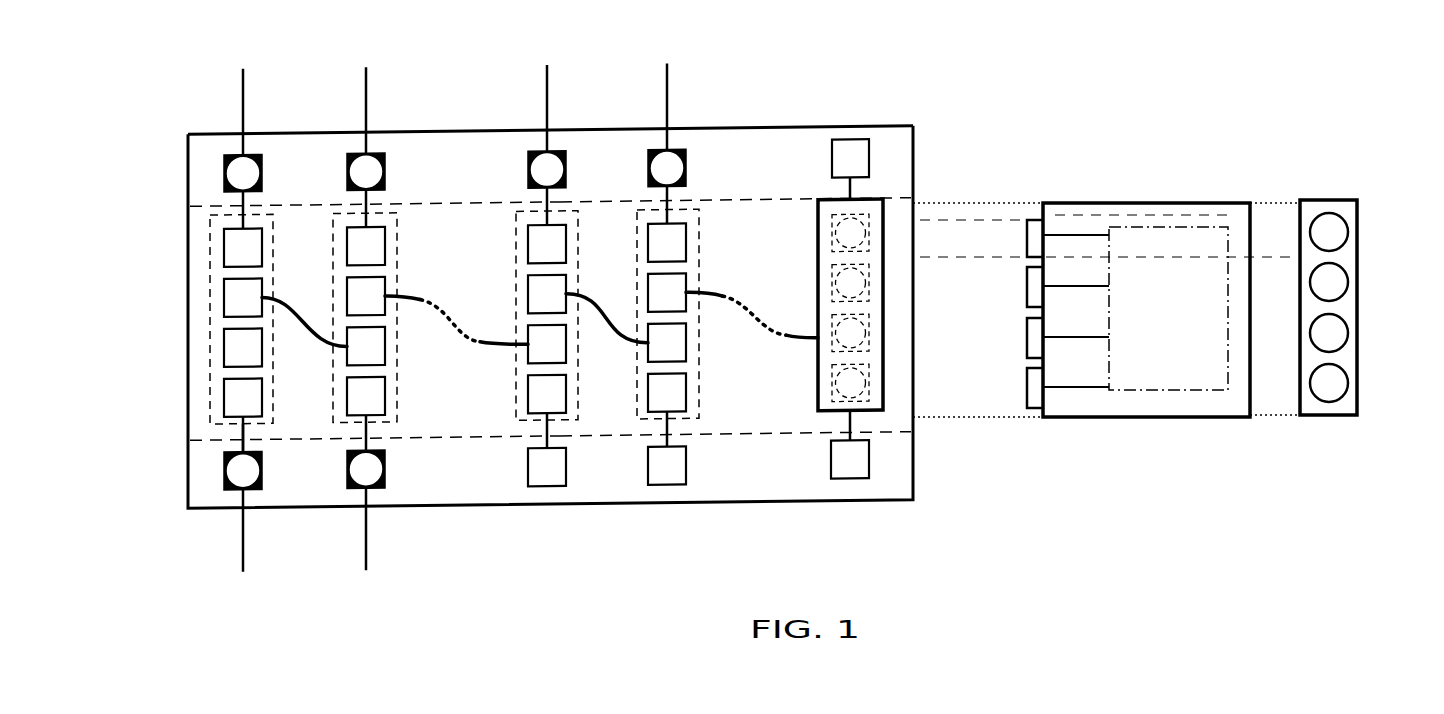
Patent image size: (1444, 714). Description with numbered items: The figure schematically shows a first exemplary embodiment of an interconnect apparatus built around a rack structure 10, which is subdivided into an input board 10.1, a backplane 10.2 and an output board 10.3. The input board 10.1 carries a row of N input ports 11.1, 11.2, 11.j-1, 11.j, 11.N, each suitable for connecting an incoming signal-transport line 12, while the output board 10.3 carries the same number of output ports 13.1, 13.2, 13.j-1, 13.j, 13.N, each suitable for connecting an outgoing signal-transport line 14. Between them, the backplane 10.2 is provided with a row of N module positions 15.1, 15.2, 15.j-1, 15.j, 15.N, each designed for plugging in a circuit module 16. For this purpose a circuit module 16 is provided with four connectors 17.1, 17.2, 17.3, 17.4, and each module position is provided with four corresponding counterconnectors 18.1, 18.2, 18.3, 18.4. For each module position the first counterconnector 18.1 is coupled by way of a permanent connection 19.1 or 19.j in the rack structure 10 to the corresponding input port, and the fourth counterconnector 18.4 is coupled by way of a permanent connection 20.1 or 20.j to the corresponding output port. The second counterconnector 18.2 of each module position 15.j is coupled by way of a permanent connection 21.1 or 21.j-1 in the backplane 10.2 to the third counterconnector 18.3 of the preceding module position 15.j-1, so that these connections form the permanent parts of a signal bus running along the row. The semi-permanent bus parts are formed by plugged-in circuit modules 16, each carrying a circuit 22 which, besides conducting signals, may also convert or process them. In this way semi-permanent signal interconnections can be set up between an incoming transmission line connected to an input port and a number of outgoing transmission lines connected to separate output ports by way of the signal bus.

The rack structure 10 is at (196, 124).
The input board 10.1 is at (203, 466).
The backplane 10.2 is at (200, 338).
The output board 10.3 is at (508, 153).
The input port 11.1 is at (263, 492).
The input port 11.2 is at (385, 493).
The input port 11.j-1 is at (565, 487).
The input port 11.j is at (688, 489).
The input port 11.N is at (872, 491).
The incoming signal-transport line 12 is at (235, 543).
The output port 13.1 is at (253, 146).
The output port 13.2 is at (384, 141).
The output port 13.j-1 is at (563, 148).
The output port 13.j is at (686, 147).
The output port 13.N is at (875, 142).
The outgoing signal-transport line 14 is at (233, 89).
The module position 15.1 is at (276, 221).
The module position 15.2 is at (400, 220).
The module position 15.j-1 is at (583, 223).
The module position 15.j is at (700, 224).
The module position 15.N is at (817, 211).
The circuit module 16 is at (886, 398).
The first connector 17.1 is at (1023, 383).
The second connector 17.2 is at (1023, 337).
The third connector 17.3 is at (1022, 290).
The fourth connector 17.4 is at (1022, 248).
The first counterconnector 18.1 is at (692, 394).
The second counterconnector 18.2 is at (692, 345).
The third counterconnector 18.3 is at (690, 284).
The fourth counterconnector 18.4 is at (697, 242).
The permanent connection 19.1 is at (243, 436).
The permanent connection 19.j is at (670, 431).
The permanent connection 20.1 is at (186, 202).
The permanent connection 20.j is at (685, 198).
The permanent connection 21.1 is at (302, 314).
The permanent connection 21.j-1 is at (607, 323).
The circuit 22 is at (1148, 391).